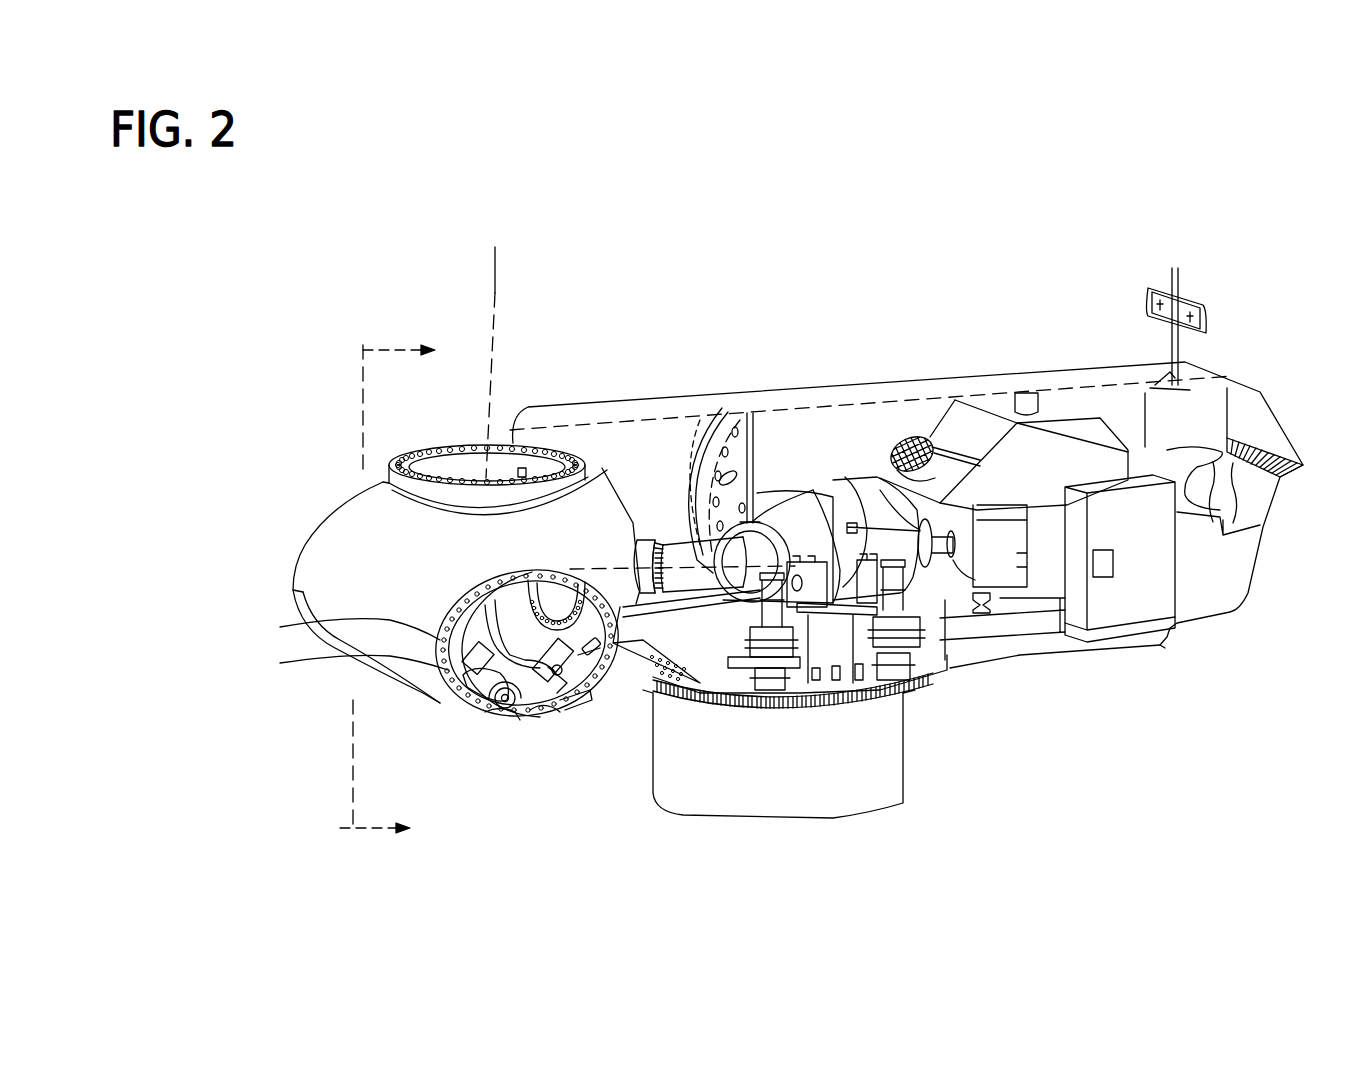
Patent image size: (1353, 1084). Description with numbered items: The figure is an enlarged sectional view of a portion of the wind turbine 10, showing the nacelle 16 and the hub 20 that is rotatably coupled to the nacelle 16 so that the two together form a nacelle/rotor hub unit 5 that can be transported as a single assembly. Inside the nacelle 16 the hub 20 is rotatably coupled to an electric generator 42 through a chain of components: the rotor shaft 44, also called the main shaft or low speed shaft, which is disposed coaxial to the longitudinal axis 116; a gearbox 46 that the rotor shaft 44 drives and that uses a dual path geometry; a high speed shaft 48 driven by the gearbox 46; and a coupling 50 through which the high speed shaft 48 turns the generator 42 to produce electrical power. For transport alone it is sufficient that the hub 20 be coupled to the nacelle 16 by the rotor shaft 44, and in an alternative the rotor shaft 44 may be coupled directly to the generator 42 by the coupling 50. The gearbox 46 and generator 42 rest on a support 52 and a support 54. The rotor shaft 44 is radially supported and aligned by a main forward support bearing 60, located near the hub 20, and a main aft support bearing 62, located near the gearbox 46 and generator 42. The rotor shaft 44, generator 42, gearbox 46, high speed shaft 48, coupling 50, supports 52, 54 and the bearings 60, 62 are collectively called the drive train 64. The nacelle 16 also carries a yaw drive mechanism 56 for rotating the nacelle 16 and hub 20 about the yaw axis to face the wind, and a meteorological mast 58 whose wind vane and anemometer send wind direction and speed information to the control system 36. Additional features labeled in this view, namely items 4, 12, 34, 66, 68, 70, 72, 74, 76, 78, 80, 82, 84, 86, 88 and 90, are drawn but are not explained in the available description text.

The nacelle/rotor hub unit 5 is at (835, 143).
The wind turbine 10 is at (318, 318).
The section line 4- 4 is at (381, 596).
The tower 12 is at (828, 818).
The nacelle 16 is at (880, 328).
The hub 20 is at (275, 575).
The axis 34 is at (495, 272).
The control system 36 is at (1110, 507).
The electric generator 42 is at (1007, 597).
The rotor shaft 44 is at (670, 552).
The gearbox 46 is at (846, 495).
The high speed shaft 48 is at (922, 600).
The coupling 50 is at (957, 500).
The support 52 is at (875, 690).
The support 54 is at (975, 615).
The yaw drive mechanism 56 is at (763, 703).
The meteorological mast 58 is at (1210, 305).
The main forward support bearing 60 is at (650, 578).
The main aft support bearing 62 is at (773, 520).
The drive train 64 is at (712, 560).
The pitch system 66 is at (483, 568).
The hub nose 68 is at (351, 666).
The pitch bearing 70 is at (567, 562).
The pitch drive pinion 72 is at (470, 715).
The pitch drive motor 74 is at (480, 640).
The pitch drive 76 is at (513, 628).
The pitch gear 78 is at (490, 722).
The sensor 80 is at (560, 700).
The pitch controller 82 is at (578, 600).
The bracket 84 is at (572, 710).
The pitch drive shaft 86 is at (540, 710).
The blade bearing 88 is at (548, 590).
The hub casting 90 is at (340, 624).
The longitudinal axis 116 is at (712, 470).